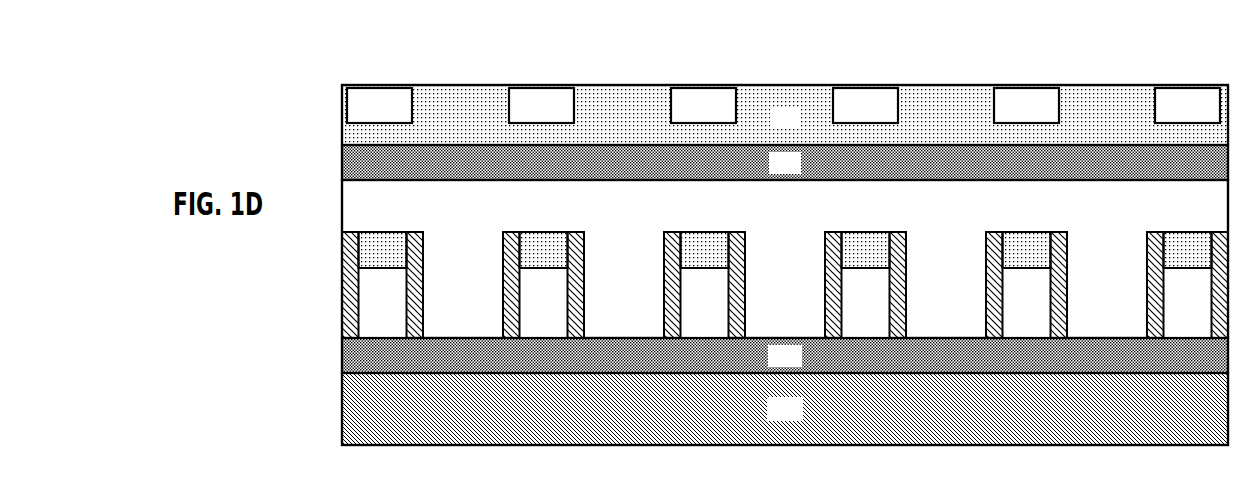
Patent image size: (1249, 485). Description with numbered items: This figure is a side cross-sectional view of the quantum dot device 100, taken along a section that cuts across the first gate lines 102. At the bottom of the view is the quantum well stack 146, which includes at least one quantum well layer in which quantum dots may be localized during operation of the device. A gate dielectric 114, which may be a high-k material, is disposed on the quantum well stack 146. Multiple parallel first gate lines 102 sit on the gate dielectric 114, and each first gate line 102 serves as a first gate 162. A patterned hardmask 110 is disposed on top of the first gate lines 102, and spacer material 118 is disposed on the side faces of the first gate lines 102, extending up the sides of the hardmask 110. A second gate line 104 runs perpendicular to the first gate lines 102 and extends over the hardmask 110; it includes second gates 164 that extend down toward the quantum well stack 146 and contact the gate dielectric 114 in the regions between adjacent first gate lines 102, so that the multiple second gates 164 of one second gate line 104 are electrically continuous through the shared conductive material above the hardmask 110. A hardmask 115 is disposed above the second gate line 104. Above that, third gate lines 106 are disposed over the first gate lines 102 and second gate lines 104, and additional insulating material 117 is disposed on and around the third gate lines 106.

The quantum dot device 100 is at (322, 108).
The first gate lines 102 is at (396, 309).
The second gate lines 104 is at (799, 212).
The third gate lines 106 is at (393, 115).
The hardmask 110 is at (396, 259).
The gate dielectric 114 is at (799, 364).
The hardmask 115 is at (799, 171).
The insulating material 117 is at (799, 125).
The spacer material 118 is at (341, 325).
The quantum well stack 146 is at (799, 417).
The first gate 162 is at (341, 398).
The second gates 164 is at (456, 245).